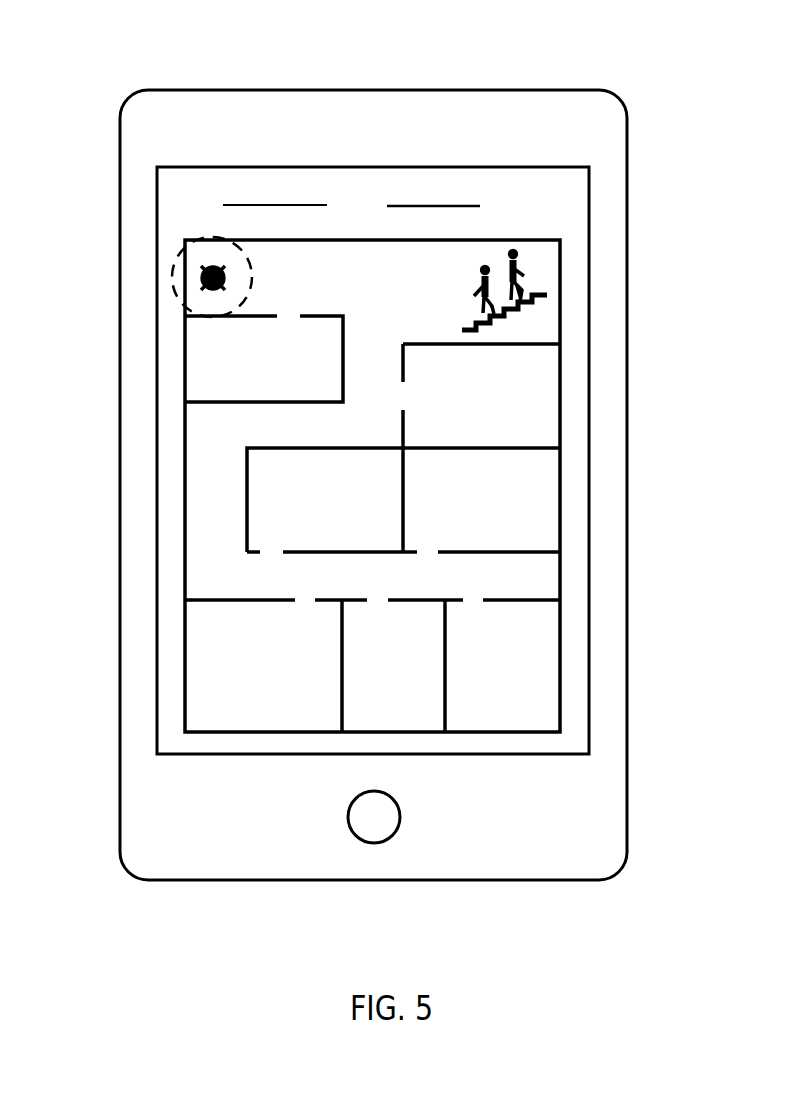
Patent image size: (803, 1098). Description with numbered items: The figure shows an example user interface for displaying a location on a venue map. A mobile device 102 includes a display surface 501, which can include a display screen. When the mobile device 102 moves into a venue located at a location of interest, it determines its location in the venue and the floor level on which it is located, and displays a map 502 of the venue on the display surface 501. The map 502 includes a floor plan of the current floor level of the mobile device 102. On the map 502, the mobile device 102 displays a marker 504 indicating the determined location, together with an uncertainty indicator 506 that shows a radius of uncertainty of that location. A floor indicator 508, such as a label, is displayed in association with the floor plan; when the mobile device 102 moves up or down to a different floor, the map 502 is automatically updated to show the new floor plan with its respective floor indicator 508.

The mobile device 102 is at (293, 90).
The display surface 501 is at (589, 483).
The map 502 is at (185, 422).
The marker 504 is at (200, 272).
The uncertainty indicator 506 is at (182, 300).
The floor indicator 508 is at (478, 203).